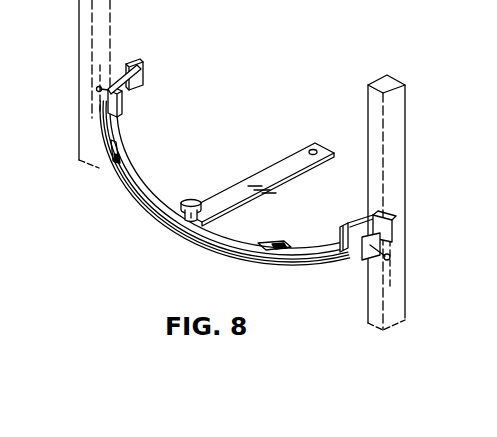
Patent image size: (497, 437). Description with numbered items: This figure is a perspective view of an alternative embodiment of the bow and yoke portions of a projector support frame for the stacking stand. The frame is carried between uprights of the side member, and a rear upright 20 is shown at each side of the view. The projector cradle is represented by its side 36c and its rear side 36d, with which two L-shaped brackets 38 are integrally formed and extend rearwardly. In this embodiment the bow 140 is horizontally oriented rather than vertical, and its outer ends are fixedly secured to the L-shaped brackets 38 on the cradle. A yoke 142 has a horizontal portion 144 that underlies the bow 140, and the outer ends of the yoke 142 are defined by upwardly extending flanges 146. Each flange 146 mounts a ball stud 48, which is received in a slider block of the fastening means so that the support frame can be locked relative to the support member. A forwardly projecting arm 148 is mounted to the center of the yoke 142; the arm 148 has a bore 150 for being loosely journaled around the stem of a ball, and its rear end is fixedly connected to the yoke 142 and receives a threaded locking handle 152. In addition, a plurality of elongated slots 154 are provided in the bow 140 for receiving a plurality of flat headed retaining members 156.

The rear upright 20 is at (78, 38).
The side of projector cradle 36c is at (133, 63).
The rear side of projector cradle 36d is at (143, 70).
The L-shaped bracket 38 is at (128, 97).
The bow 140 is at (225, 191).
The yoke 142 is at (158, 225).
The horizontal portion 144 is at (223, 259).
The flange 146 is at (377, 237).
The arm 148 is at (267, 171).
The bore 150 is at (315, 152).
The threaded locking handle 152 is at (191, 202).
The elongated slot 154 is at (111, 147).
The flat headed retaining member 156 is at (119, 161).
The ball stud 48 is at (390, 258).